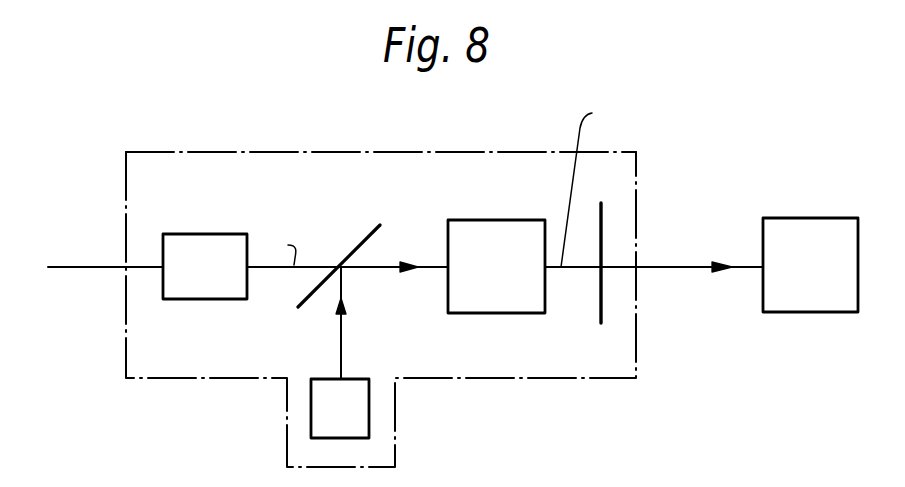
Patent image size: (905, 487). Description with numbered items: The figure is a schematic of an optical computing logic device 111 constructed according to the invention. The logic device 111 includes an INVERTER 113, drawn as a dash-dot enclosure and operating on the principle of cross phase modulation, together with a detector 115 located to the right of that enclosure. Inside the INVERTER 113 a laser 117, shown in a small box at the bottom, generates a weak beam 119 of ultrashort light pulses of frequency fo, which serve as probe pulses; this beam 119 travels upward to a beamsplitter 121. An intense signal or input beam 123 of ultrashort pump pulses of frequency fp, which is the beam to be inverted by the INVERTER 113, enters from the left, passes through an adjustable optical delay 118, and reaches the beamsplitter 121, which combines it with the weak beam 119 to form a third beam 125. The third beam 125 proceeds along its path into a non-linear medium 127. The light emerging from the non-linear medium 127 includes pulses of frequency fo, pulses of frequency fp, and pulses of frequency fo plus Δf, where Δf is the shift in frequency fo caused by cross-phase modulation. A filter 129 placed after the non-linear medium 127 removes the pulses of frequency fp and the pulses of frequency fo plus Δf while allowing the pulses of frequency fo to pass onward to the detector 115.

The optical computing logic device 111 is at (234, 397).
The INVERTER 113 is at (383, 153).
The detector 115 is at (812, 217).
The laser 117 is at (369, 417).
The adjustable optical delay 118 is at (226, 234).
The weak beam 119 is at (340, 322).
The beamsplitter 121 is at (365, 238).
The input beam 123 is at (84, 266).
The third beam 125 is at (388, 265).
The non-linear medium 127 is at (497, 219).
The filter 129 is at (603, 210).